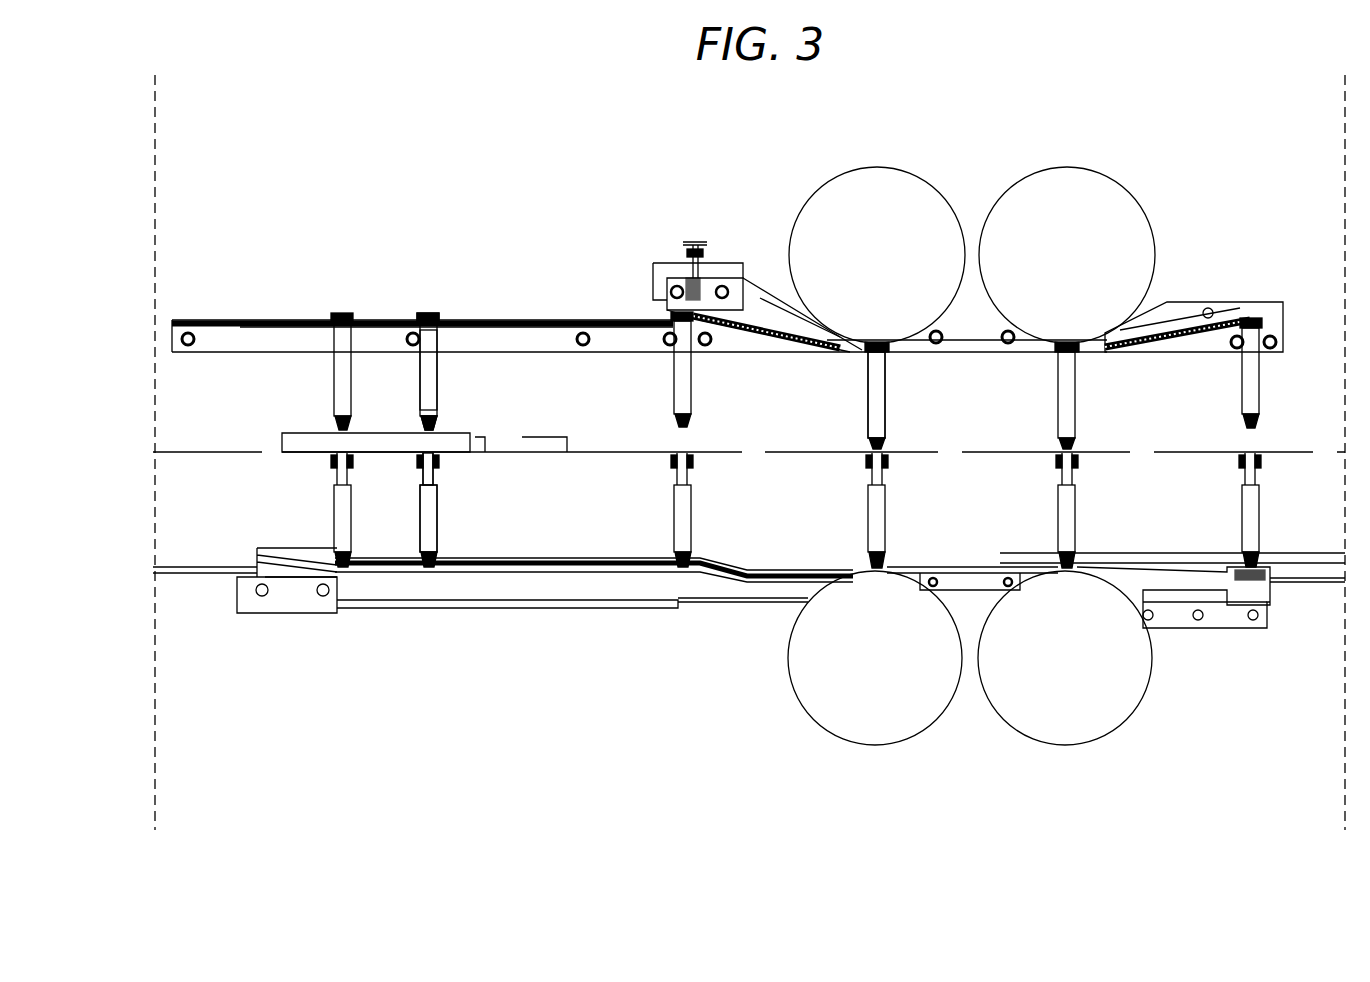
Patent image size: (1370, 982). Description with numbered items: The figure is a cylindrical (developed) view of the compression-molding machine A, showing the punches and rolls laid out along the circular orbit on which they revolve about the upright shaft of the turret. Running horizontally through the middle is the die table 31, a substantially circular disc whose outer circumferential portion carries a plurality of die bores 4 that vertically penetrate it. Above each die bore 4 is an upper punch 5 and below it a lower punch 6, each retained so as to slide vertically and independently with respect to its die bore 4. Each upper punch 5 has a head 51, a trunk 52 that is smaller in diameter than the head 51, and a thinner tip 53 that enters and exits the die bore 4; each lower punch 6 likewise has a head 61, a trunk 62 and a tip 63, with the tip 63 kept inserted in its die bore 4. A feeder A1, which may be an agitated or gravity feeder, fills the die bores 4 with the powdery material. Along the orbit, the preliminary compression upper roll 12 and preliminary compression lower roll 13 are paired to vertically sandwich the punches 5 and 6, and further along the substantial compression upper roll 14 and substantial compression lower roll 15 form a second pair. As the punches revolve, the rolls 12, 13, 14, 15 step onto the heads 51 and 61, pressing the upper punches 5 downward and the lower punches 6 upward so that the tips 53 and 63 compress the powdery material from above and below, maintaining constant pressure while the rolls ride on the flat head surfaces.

The preliminary compression upper roll 12 is at (880, 165).
The preliminary compression lower roll 13 is at (875, 745).
The substantial compression upper roll 14 is at (1068, 165).
The substantial compression lower roll 15 is at (1065, 745).
The die table 31 is at (860, 440).
The die bore 4 is at (332, 456).
The upper punch 5 is at (333, 369).
The head 51 is at (431, 312).
The trunk 52 is at (438, 386).
The tip 53 is at (436, 424).
The lower punch 6 is at (333, 507).
The head 61 is at (427, 570).
The trunk 62 is at (438, 520).
The tip 63 is at (438, 466).
The molding machine A is at (738, 213).
The feeder A1 is at (384, 432).